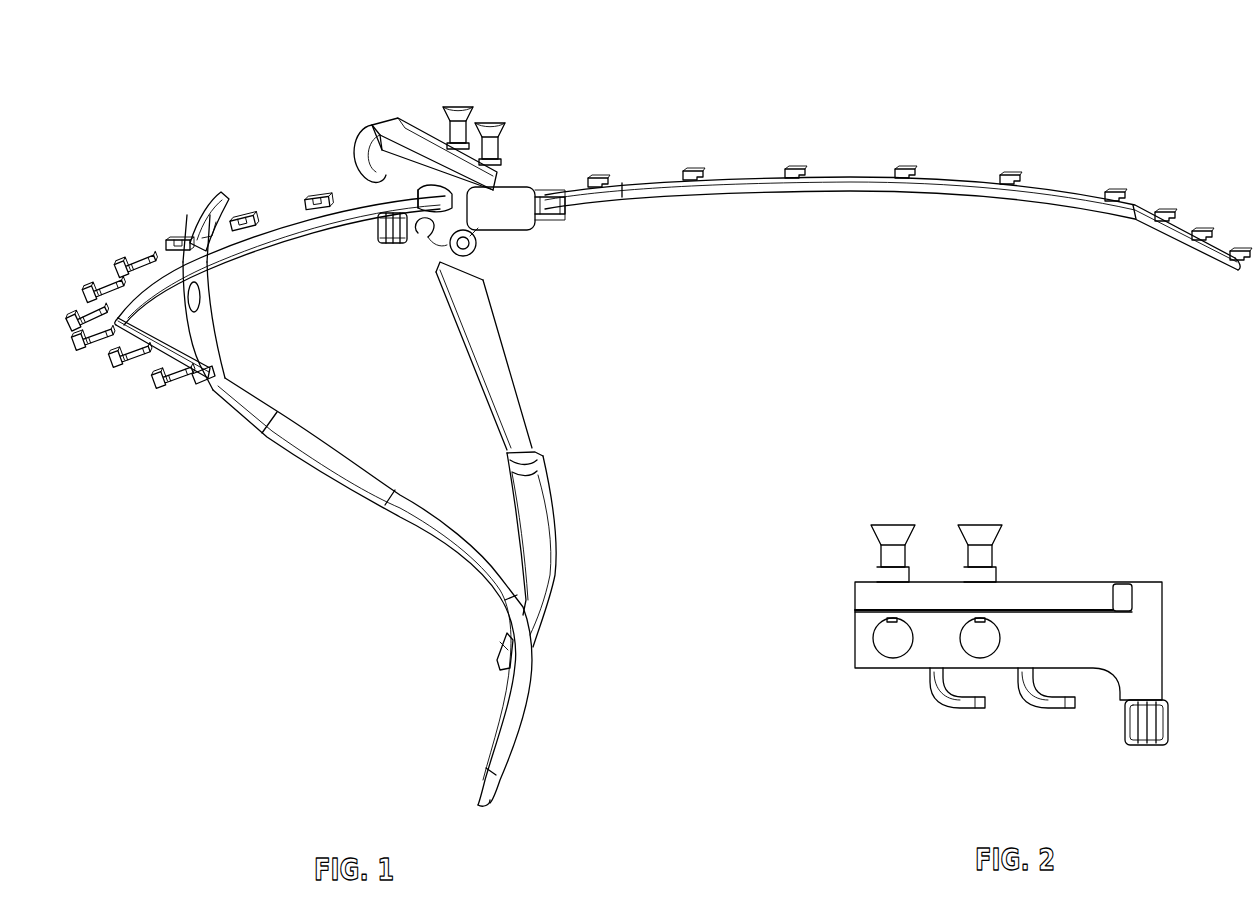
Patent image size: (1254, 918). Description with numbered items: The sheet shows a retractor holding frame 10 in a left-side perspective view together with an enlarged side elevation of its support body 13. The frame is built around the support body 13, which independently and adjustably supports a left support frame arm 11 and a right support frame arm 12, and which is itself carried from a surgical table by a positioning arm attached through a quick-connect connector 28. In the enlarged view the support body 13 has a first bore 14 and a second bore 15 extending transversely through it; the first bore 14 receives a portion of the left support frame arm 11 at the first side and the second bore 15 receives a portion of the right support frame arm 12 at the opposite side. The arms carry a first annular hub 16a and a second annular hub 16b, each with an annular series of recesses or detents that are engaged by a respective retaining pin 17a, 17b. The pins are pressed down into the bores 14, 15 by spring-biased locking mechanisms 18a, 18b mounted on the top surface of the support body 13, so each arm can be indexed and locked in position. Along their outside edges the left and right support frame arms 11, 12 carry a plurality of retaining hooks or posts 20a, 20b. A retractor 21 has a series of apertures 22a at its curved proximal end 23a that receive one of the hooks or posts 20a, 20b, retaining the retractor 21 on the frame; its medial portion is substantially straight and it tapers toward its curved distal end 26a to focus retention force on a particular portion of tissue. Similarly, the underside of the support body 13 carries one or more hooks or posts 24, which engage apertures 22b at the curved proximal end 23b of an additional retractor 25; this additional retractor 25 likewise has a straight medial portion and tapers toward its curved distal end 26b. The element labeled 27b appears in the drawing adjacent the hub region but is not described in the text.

In FIG. 1, the retractor holding frame 10 is at (585, 240).
In FIG. 1, the left support frame arm 11 is at (240, 256).
In FIG. 1, the right support frame arm 12 is at (942, 205).
In FIG. 1, the support body 13 is at (358, 138).
In FIG. 2, the support body 13 is at (1092, 580).
In FIG. 2, the first bore 14 is at (998, 642).
In FIG. 2, the second bore 15 is at (873, 645).
In FIG. 1, the first annular hub 16a is at (375, 123).
In FIG. 1, the second annular hub 16b is at (548, 190).
In FIG. 2, the retaining pin 17a is at (983, 624).
In FIG. 2, the retaining pin 17b is at (888, 620).
In FIG. 1, the spring-biased locking mechanism 18a is at (460, 105).
In FIG. 2, the spring-biased locking mechanism 18a is at (980, 522).
In FIG. 1, the spring-biased locking mechanism 18b is at (492, 121).
In FIG. 2, the spring-biased locking mechanism 18b is at (891, 522).
In FIG. 1, the retaining hooks or posts 20a is at (124, 258).
In FIG. 1, the retaining hooks or posts 20b is at (705, 176).
In FIG. 1, the retractor 21 is at (297, 455).
In FIG. 1, the apertures 22a is at (200, 300).
In FIG. 1, the apertures 22b is at (478, 252).
In FIG. 1, the proximal end 23a is at (216, 195).
In FIG. 1, the proximal end 23b is at (478, 268).
In FIG. 1, the hooks or posts 24 is at (425, 240).
In FIG. 2, the hooks or posts 24 is at (1050, 712).
In FIG. 1, the additional retractor 25 is at (512, 384).
In FIG. 1, the distal end 26a is at (484, 806).
In FIG. 1, the distal end 26b is at (498, 668).
In FIG. 1, the pivot boss 27b is at (413, 188).
In FIG. 1, the quick-connect connector 28 is at (385, 245).
In FIG. 2, the quick-connect connector 28 is at (1156, 746).